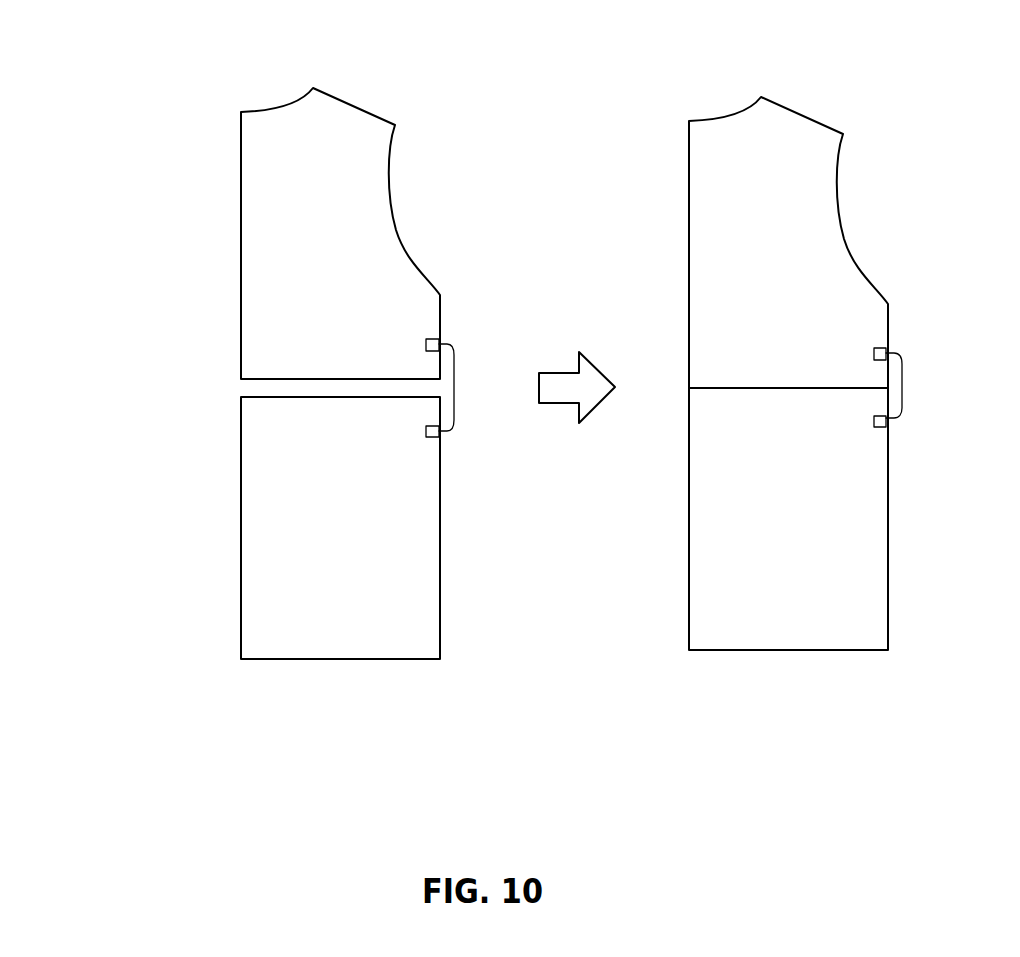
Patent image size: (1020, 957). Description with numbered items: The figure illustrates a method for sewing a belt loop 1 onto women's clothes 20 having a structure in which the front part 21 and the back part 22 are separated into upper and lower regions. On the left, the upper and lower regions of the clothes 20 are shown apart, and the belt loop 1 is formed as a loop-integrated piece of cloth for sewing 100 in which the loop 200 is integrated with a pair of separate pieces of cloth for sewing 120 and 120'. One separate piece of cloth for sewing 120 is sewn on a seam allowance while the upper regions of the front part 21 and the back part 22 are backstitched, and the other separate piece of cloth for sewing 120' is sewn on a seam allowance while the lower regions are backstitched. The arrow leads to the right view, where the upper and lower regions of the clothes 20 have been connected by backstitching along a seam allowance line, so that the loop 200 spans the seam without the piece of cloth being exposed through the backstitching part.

The clothes 20 is at (284, 408).
The front part 21 is at (355, 125).
The back part 22 is at (410, 632).
The loop-integrated piece of cloth for sewing 100 is at (327, 384).
The belt loop 1 is at (361, 384).
The separate piece of cloth for sewing 120 is at (288, 348).
The separate piece of cloth for sewing 120' is at (288, 436).
The loop 200 is at (455, 410).